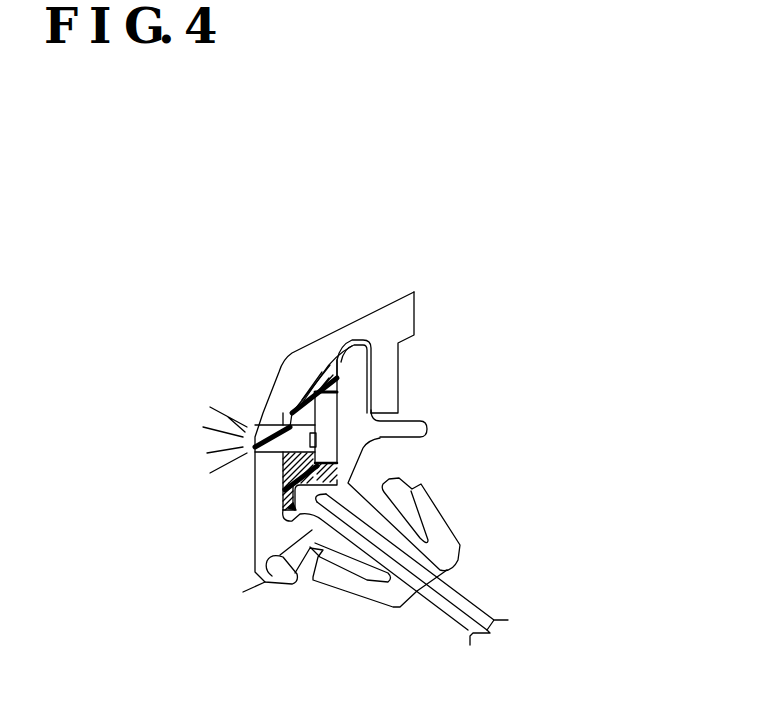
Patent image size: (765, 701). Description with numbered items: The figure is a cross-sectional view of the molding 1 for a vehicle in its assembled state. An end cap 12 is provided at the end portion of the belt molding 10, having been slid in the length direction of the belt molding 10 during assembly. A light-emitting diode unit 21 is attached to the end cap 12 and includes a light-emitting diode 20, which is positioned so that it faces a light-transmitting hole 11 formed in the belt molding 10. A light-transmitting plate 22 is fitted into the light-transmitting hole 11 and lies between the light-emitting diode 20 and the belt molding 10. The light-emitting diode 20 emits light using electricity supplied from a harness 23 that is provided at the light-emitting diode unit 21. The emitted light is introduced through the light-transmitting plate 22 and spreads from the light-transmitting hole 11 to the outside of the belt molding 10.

The molding 1 is at (268, 290).
The belt molding 10 is at (290, 378).
The light-transmitting hole 11 is at (252, 443).
The end cap 12 is at (347, 433).
The light-emitting diode 20 is at (275, 428).
The light-emitting diode unit 21 is at (328, 413).
The light-transmitting plate 22 is at (257, 452).
The harness 23 is at (447, 585).